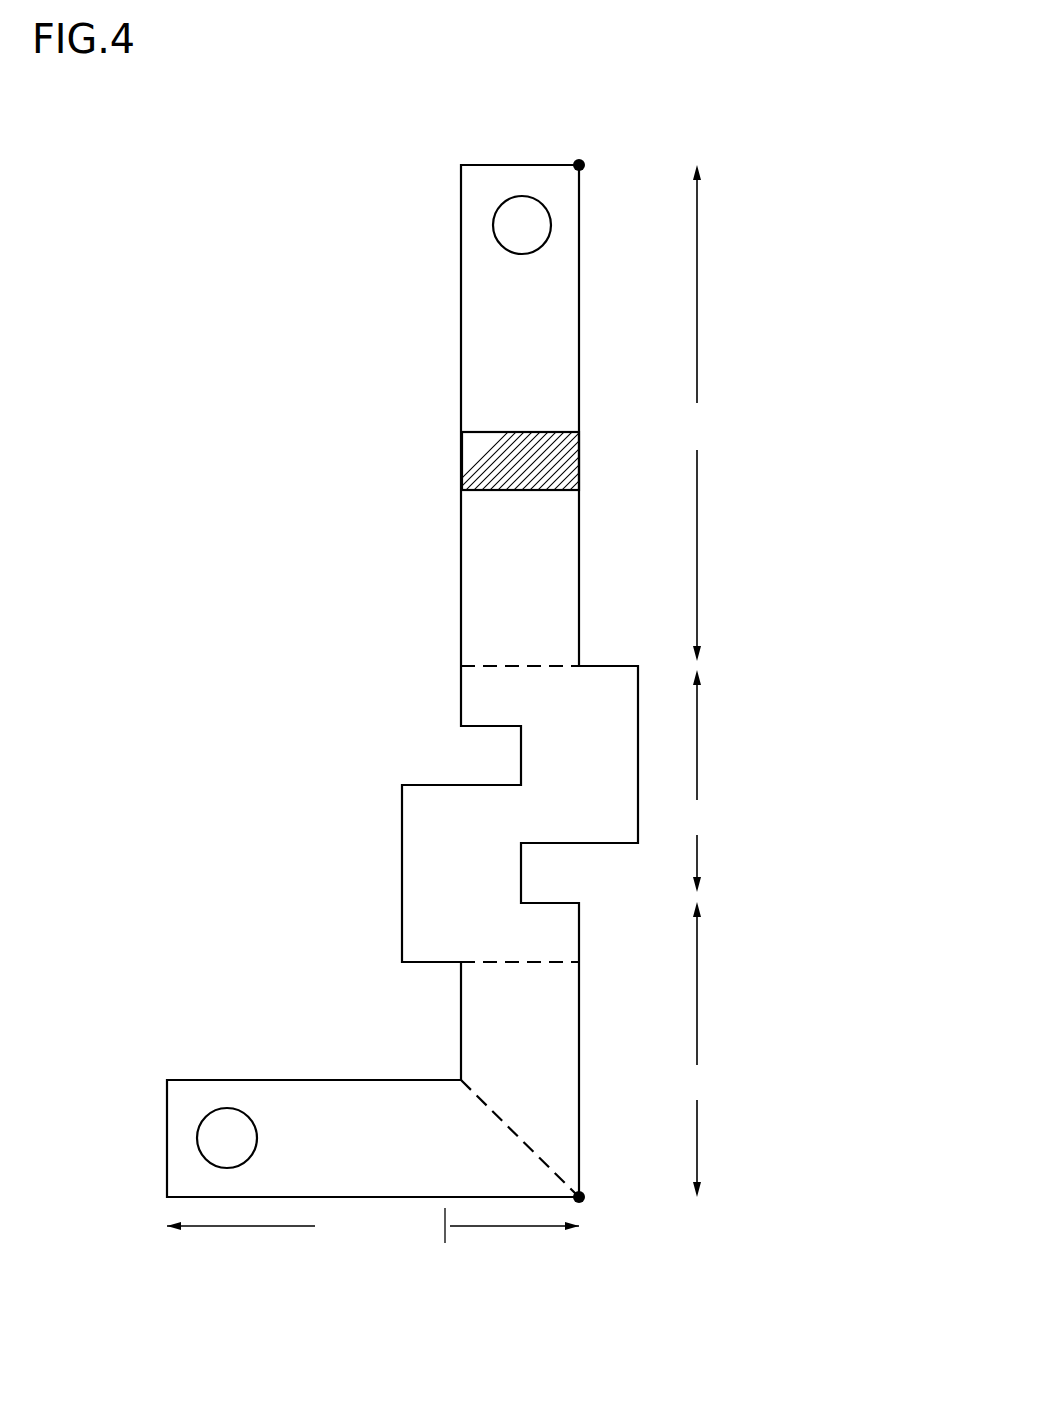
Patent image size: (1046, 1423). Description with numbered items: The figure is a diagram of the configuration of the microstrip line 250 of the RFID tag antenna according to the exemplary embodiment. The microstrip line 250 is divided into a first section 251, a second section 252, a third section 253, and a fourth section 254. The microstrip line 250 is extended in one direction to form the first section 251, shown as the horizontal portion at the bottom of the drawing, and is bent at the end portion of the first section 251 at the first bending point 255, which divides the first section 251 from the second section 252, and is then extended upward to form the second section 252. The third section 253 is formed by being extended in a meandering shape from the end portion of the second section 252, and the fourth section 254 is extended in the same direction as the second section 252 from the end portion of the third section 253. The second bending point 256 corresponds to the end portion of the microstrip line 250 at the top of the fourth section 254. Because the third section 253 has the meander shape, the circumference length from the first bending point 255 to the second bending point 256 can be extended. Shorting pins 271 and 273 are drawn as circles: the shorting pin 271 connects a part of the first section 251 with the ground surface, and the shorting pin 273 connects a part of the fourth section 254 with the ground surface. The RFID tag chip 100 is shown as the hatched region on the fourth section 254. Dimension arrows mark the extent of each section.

The RFID tag chip 100 is at (461, 463).
The microstrip line 250 is at (461, 610).
The first section 251 is at (372, 1243).
The second section 252 is at (805, 1085).
The third section 253 is at (805, 818).
The fourth section 254 is at (805, 435).
The first bending point 255 is at (581, 1200).
The second bending point 256 is at (581, 163).
The shorting pin 271 is at (197, 1138).
The shorting pin 273 is at (493, 225).